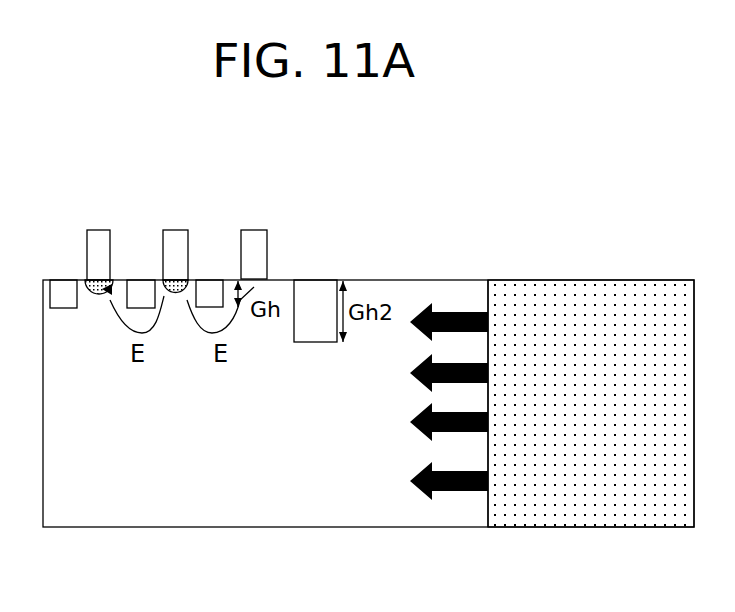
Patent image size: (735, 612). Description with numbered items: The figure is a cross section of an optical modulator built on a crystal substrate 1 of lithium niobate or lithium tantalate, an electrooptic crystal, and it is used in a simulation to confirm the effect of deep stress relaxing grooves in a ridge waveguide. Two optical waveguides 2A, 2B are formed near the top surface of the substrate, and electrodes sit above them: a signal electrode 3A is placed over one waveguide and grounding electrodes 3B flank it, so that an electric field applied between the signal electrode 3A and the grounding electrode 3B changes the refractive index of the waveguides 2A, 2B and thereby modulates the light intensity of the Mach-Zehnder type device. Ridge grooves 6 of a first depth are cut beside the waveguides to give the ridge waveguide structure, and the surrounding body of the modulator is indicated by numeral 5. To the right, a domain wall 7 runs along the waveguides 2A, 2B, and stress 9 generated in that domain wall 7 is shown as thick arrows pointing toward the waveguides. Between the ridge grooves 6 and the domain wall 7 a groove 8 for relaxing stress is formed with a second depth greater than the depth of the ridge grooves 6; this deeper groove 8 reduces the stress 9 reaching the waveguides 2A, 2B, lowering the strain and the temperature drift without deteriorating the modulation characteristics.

The crystal substrate 1 is at (606, 400).
The optical waveguide 2A is at (175, 303).
The optical waveguide 2B is at (99, 303).
The signal electrode 3A is at (182, 227).
The grounding electrode 3B is at (100, 235).
The semiconductor layer 5 is at (168, 488).
The ridge grooves 6 is at (138, 295).
The domain wall 7 is at (490, 527).
The grooves for relaxing stress 8 is at (307, 290).
The stress 9 is at (407, 487).